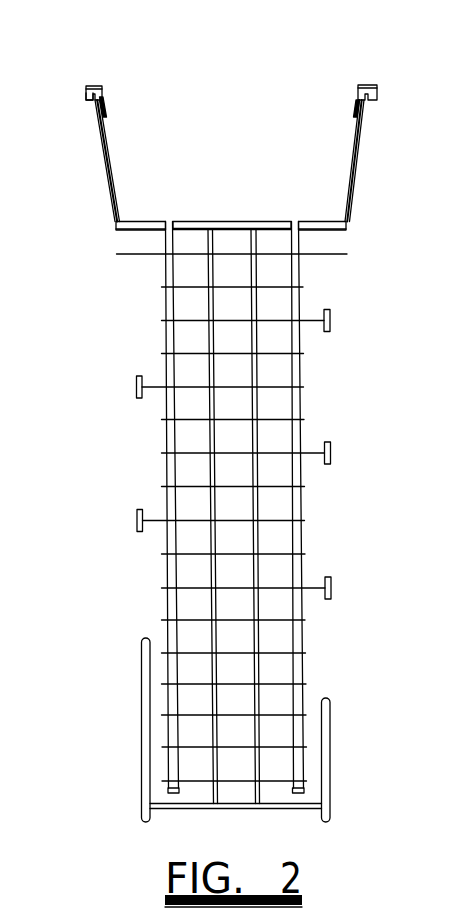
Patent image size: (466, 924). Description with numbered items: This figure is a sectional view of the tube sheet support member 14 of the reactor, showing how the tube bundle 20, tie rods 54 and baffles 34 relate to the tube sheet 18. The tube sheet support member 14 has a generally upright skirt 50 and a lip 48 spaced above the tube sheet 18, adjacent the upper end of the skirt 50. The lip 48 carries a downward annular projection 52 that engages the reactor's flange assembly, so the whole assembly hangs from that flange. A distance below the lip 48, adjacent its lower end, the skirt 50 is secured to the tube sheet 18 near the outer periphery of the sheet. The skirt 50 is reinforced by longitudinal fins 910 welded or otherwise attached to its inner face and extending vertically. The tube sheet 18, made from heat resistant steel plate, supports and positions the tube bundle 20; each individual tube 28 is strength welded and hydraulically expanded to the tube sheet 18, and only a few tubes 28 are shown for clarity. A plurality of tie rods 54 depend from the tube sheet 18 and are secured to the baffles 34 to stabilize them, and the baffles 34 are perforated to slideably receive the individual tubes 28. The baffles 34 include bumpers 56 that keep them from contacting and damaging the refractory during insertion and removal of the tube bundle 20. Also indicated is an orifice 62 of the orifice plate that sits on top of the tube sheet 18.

The tube sheet support member 14 is at (121, 119).
The tube sheet 18 is at (130, 220).
The tube bundle 20 is at (232, 522).
The tube 28 is at (166, 443).
The baffle 34 is at (302, 420).
The lip 48 is at (91, 85).
The skirt 50 is at (112, 157).
The downward annular projection 52 is at (86, 98).
The tie rod 54 is at (213, 275).
The bumper 56 is at (135, 393).
The orifice 62 is at (299, 216).
The longitudinal fin 910 is at (106, 107).